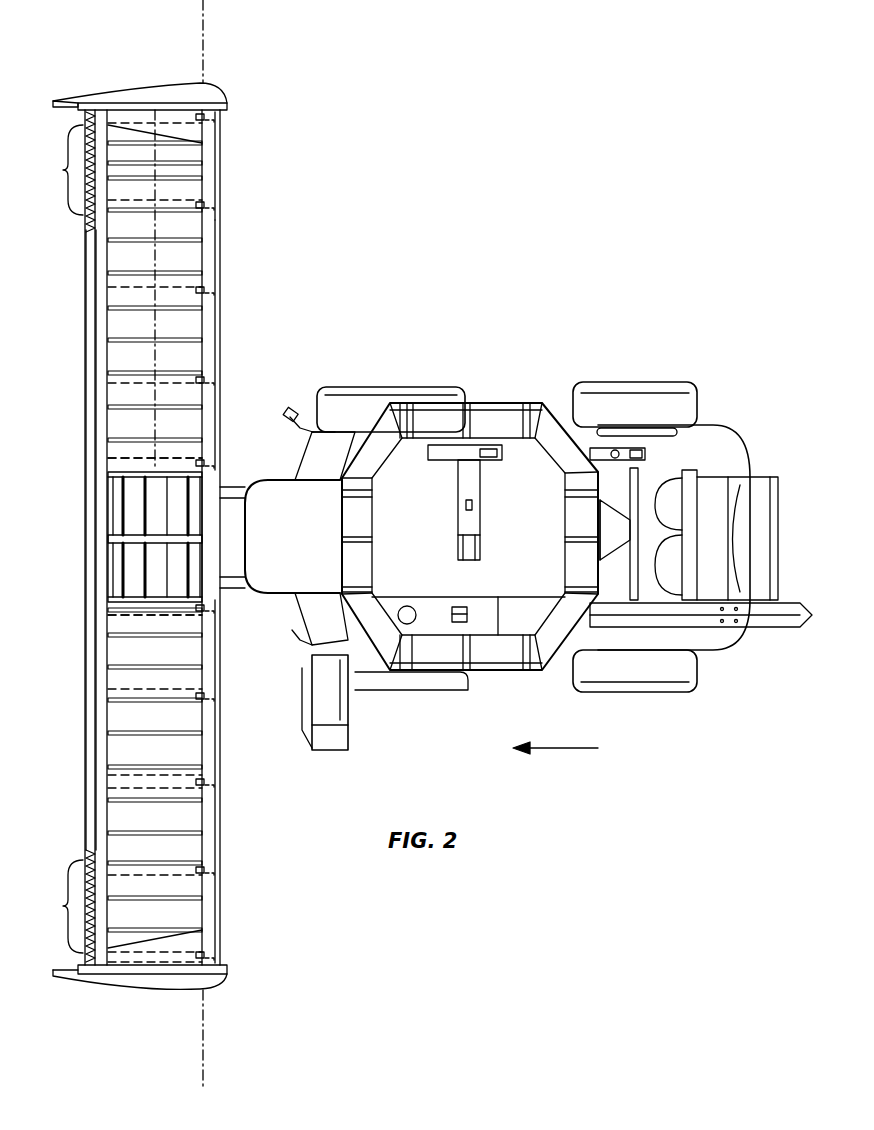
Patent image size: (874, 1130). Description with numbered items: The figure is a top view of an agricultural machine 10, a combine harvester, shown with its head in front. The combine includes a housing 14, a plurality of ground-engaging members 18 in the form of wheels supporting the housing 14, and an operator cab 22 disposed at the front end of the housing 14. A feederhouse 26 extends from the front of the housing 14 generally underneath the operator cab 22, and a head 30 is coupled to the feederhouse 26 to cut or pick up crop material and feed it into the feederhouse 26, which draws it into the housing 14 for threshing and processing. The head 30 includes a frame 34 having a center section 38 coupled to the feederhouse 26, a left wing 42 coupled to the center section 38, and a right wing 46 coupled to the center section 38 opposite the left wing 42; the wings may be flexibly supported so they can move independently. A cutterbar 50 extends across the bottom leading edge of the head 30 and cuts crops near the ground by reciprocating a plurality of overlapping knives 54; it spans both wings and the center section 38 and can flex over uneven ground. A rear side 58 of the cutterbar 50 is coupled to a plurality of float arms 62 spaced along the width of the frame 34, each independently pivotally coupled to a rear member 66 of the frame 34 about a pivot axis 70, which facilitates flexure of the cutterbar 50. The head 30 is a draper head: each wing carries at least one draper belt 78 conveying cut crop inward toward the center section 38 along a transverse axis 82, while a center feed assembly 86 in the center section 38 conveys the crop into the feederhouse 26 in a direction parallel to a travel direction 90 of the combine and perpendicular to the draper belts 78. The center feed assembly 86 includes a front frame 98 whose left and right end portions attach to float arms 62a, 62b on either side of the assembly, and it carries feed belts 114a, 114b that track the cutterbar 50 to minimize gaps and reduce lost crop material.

The agricultural machine 10 is at (569, 278).
The housing 14 is at (680, 455).
The ground-engaging members 18 is at (618, 382).
The operator cab 22 is at (282, 478).
The feederhouse 26 is at (233, 565).
The head 30 is at (236, 191).
The frame 34 is at (222, 234).
The center section 38 is at (220, 452).
The left wing 42 is at (210, 862).
The right wing 46 is at (214, 130).
The cutterbar 50 is at (86, 360).
The knives 54 is at (63, 170).
The rear side 58 is at (107, 290).
The float arms 62 is at (177, 280).
The float arm 62a is at (140, 604).
The float arm 62b is at (134, 457).
The rear member 66 is at (216, 330).
The pivot axis 70 is at (203, 32).
The draper belt 78 is at (115, 425).
The transverse axis 82 is at (150, 150).
The center feed assembly 86 is at (107, 555).
The travel direction 90 is at (573, 748).
The front frame 98 is at (133, 556).
The feed belt 114a is at (133, 582).
The feed belt 114b is at (133, 501).